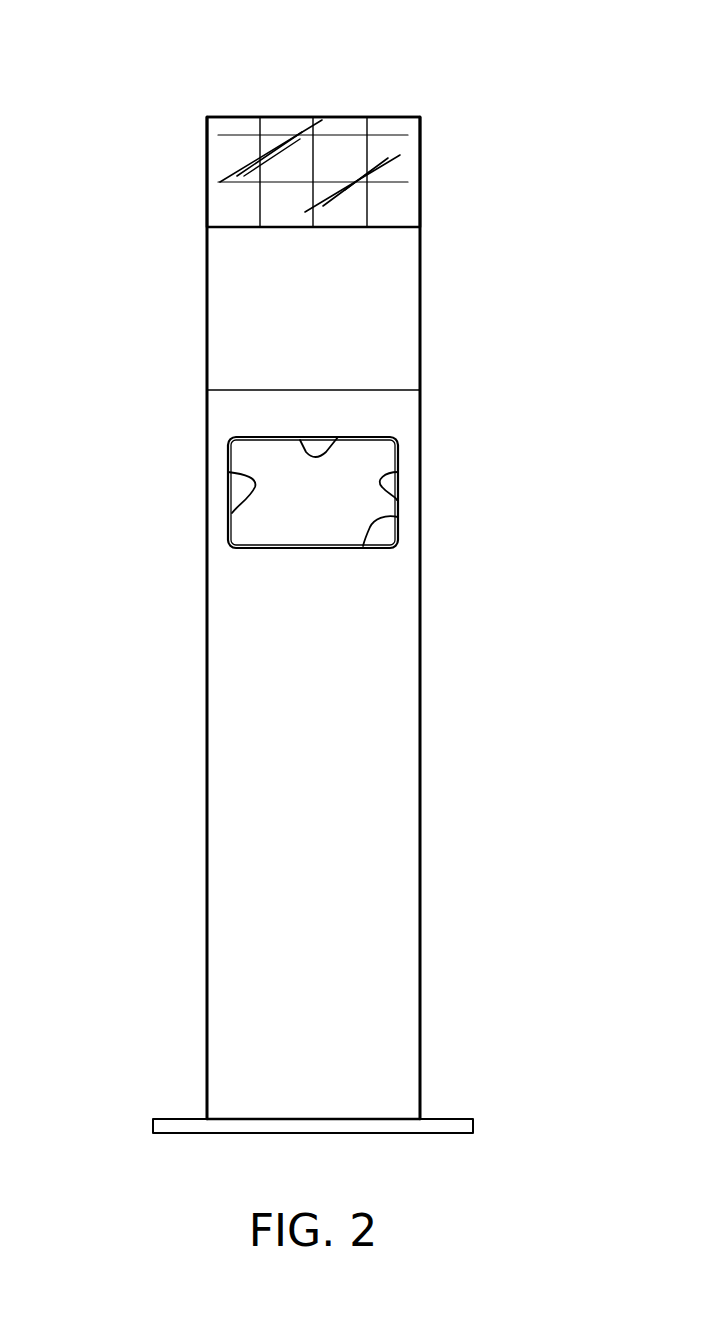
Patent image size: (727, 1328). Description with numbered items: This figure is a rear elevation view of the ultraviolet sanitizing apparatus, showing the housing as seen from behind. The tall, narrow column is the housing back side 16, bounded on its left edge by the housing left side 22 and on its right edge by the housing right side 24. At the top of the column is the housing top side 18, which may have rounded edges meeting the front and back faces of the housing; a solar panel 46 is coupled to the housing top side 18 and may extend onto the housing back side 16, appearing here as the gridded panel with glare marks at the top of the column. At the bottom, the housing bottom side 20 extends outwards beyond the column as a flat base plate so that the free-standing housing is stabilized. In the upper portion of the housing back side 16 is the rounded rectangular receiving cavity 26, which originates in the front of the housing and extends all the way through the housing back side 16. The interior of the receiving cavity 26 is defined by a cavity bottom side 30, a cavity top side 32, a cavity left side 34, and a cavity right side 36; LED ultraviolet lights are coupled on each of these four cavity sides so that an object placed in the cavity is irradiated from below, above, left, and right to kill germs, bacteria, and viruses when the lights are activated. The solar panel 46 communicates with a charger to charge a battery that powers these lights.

The housing back side 16 is at (370, 823).
The housing top side 18 is at (408, 122).
The housing bottom side 20 is at (342, 1127).
The housing left side 22 is at (420, 692).
The housing right side 24 is at (207, 630).
The receiving cavity 26 is at (342, 473).
The cavity bottom side 30 is at (398, 517).
The cavity top side 32 is at (338, 437).
The cavity left side 34 is at (398, 472).
The cavity right side 36 is at (228, 472).
The solar panel 46 is at (400, 156).